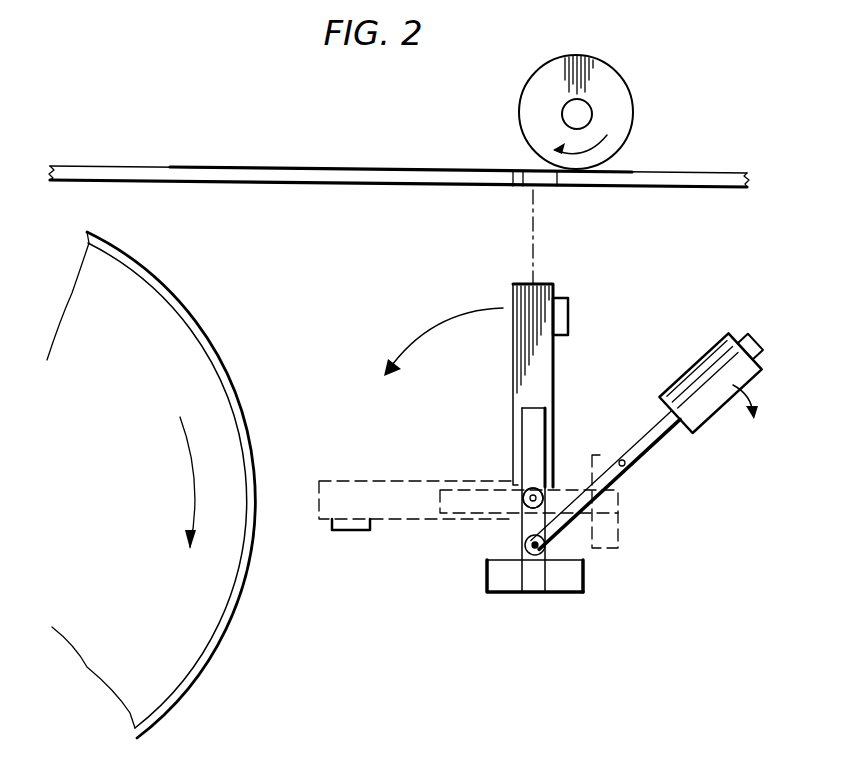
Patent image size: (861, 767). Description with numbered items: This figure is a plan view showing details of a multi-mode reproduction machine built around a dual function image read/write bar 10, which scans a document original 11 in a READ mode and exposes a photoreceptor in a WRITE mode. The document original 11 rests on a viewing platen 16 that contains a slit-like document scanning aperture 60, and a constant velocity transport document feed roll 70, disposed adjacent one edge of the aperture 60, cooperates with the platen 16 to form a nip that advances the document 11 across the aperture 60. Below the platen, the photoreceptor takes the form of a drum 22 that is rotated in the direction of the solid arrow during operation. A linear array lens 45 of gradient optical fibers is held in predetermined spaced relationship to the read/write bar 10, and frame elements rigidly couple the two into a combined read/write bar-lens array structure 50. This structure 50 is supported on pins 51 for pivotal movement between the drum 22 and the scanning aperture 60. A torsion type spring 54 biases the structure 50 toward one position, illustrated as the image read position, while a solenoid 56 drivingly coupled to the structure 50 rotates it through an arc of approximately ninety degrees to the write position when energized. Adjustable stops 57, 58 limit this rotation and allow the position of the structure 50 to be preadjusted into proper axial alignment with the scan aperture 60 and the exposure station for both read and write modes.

The dual function image read/write bar 10 is at (560, 606).
The document original 11 is at (320, 166).
The viewing platen 16 is at (128, 165).
The photoreceptor drum 22 is at (183, 308).
The linear array lens 45 is at (566, 390).
The read/write bar-lens array structure 50 is at (490, 425).
The pins 51 is at (518, 483).
The torsion type spring 54 is at (525, 508).
The solenoid 56 is at (690, 378).
The adjustable stop 57 is at (570, 320).
The adjustable stop 58 is at (357, 532).
The document scanning aperture 60 is at (520, 187).
The document feed roll 70 is at (537, 93).